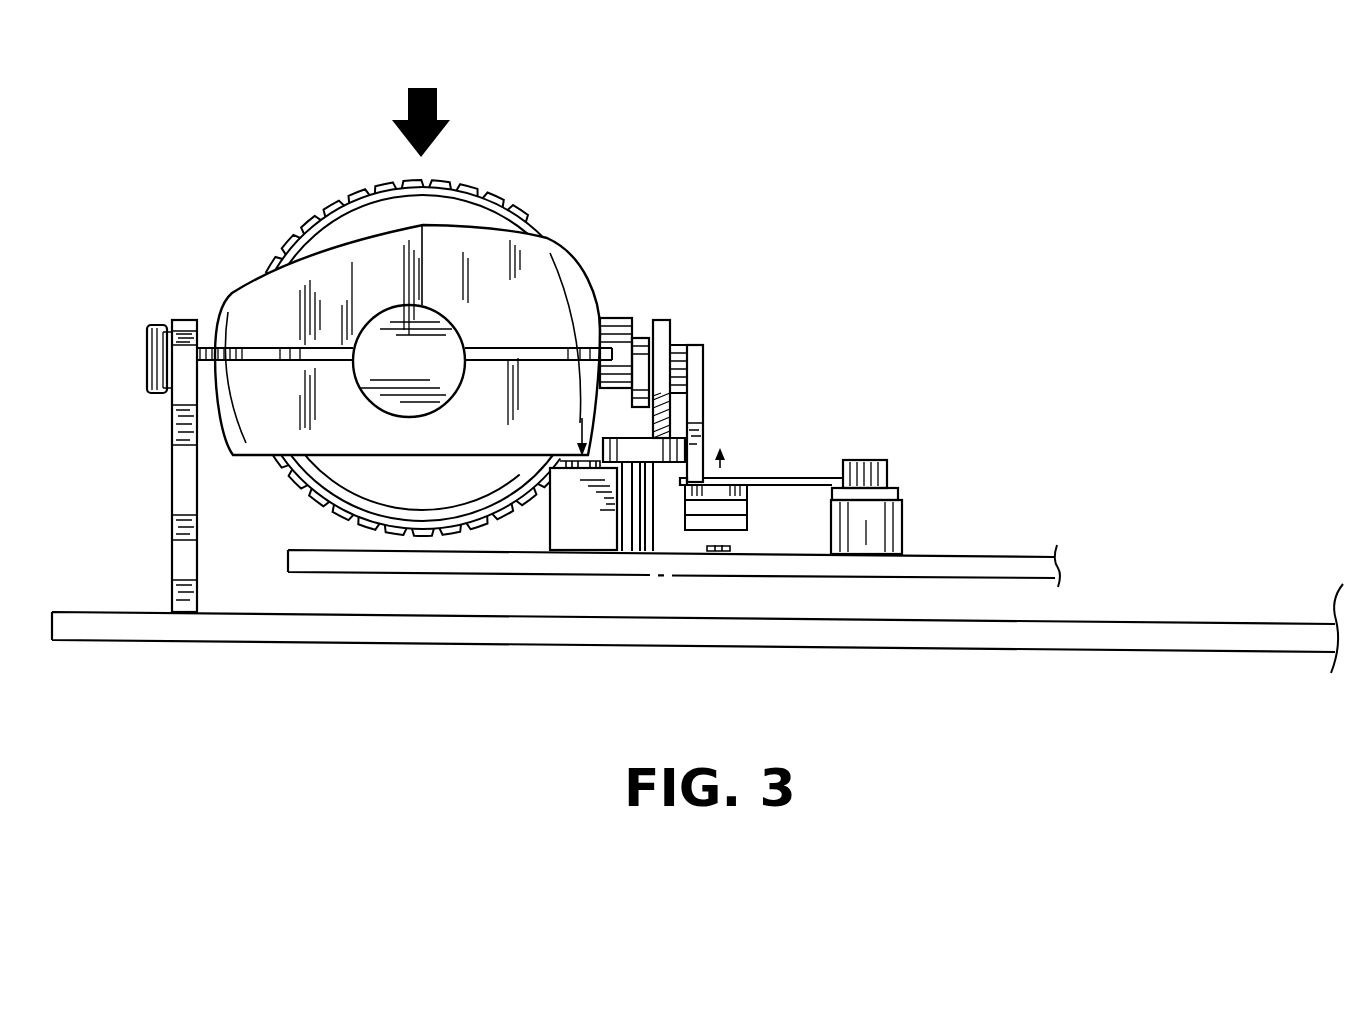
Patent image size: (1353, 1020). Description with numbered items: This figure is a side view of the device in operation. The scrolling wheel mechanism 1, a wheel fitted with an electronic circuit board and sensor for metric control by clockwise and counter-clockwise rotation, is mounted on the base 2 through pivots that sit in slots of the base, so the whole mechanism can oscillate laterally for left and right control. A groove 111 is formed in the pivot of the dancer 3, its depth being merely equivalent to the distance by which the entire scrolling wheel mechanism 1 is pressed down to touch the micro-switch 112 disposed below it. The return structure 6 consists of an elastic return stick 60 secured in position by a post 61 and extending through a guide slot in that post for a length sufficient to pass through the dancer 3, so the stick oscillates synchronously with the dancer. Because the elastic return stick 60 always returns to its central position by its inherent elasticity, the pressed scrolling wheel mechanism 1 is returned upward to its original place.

The scrolling wheel mechanism 1 is at (541, 210).
The base 2 is at (176, 460).
The dancer 3 is at (705, 398).
The return structure 6 is at (835, 431).
The elastic return stick 60 is at (780, 478).
The post 61 is at (893, 516).
The groove 111 is at (690, 346).
The micro-switch 112 is at (566, 520).